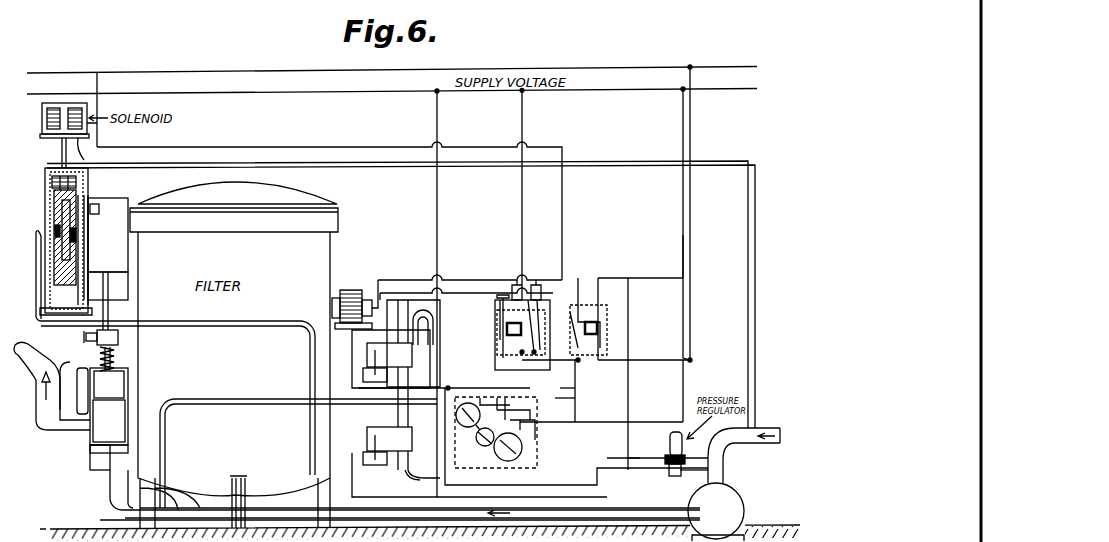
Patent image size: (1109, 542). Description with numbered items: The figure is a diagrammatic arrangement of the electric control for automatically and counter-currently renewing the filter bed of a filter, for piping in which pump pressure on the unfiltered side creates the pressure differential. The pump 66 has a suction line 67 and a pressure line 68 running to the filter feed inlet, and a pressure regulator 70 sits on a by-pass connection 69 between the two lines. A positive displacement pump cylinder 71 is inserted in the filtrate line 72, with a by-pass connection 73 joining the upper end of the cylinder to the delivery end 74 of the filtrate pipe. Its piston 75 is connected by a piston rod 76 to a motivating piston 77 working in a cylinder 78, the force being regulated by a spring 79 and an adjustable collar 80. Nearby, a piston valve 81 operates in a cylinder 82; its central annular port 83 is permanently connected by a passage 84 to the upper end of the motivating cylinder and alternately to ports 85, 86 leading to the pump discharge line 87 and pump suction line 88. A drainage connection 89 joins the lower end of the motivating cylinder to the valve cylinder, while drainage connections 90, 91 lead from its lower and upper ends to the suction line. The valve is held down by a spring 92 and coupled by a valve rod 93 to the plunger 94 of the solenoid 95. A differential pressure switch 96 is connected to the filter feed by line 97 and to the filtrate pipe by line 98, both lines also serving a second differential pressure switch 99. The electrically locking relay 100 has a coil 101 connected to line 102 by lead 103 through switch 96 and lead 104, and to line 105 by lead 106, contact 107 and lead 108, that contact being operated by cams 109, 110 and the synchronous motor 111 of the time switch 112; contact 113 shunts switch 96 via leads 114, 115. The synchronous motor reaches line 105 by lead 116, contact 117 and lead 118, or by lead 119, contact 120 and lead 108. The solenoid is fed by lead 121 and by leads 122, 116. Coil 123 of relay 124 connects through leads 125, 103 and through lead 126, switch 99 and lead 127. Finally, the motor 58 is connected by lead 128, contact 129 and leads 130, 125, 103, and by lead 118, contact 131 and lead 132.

The motor 58 is at (352, 288).
The pump 66 is at (744, 506).
The suction line 67 is at (772, 406).
The pressure line 68 is at (625, 504).
The by-pass connection 69 is at (685, 480).
The pressure regulator 70 is at (670, 442).
The positive displacement pump cylinder 71 is at (98, 462).
The filtrate line 72 is at (122, 512).
The by-pass connection 73 is at (72, 414).
The delivery end 74 is at (40, 360).
The piston 75 is at (118, 420).
The piston rod 76 is at (110, 318).
The motivating piston 77 is at (128, 258).
The cylinder 78 is at (118, 290).
The spring 79 is at (118, 357).
The adjustable collar 80 is at (94, 336).
The piston valve 81 is at (62, 208).
The cylinder 82 is at (78, 190).
The central annular port 83 is at (62, 240).
The passage 84 is at (90, 205).
The port 85 is at (55, 230).
The port 86 is at (58, 262).
The pump discharge line 87 is at (262, 325).
The pump suction line 88 is at (362, 166).
The drainage connection 89 is at (60, 321).
The drainage connection 90 is at (70, 311).
The drainage connection 91 is at (46, 170).
The spring 92 is at (52, 185).
The valve rod 93 is at (61, 152).
The plunger 94 is at (89, 152).
The solenoid 95 is at (43, 112).
The differential pressure switch 96 is at (367, 355).
The line 97 is at (412, 478).
The line 98 is at (228, 404).
The differential pressure switch 99 is at (368, 432).
The electrically locking relay 100 is at (492, 345).
The coil 101 is at (507, 329).
The line 102 is at (718, 67).
The lead 103 is at (693, 140).
The lead 104 is at (392, 322).
The line 105 is at (718, 89).
The lead 106 is at (560, 402).
The contact 107 is at (478, 392).
The lead 108 is at (683, 236).
The cam 109 is at (448, 388).
The cam 110 is at (478, 445).
The synchronous motor 111 is at (502, 458).
The time switch 112 is at (576, 443).
The contact 113 is at (500, 312).
The lead 114 is at (540, 388).
The lead 115 is at (497, 298).
The lead 116 is at (575, 390).
The contact 117 is at (530, 290).
The lead 118 is at (522, 270).
The lead 119 is at (539, 437).
The contact 120 is at (533, 425).
The lead 121 is at (100, 81).
The lead 122 is at (258, 147).
The coil 123 is at (597, 328).
The relay 124 is at (606, 318).
The lead 125 is at (648, 362).
The lead 126 is at (628, 282).
The lead 127 is at (460, 294).
The lead 128 is at (412, 280).
The contact 129 is at (590, 298).
The lead 130 is at (580, 362).
The contact 131 is at (546, 310).
The lead 132 is at (500, 293).